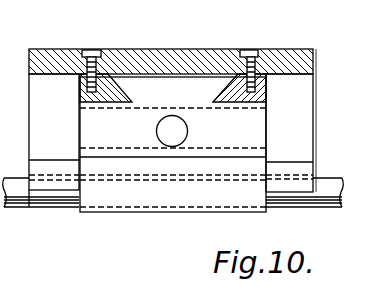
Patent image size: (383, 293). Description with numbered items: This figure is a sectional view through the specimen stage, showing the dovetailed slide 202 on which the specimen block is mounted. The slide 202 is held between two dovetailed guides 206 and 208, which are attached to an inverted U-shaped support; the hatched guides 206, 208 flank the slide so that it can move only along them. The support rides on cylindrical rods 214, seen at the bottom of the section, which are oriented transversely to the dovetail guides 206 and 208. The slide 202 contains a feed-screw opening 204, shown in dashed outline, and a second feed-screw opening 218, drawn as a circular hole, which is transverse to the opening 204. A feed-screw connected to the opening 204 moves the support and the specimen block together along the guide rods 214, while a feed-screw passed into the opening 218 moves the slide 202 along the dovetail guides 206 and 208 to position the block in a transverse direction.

The dovetailed slide 202 is at (175, 97).
The feed-screw opening 204 is at (241, 110).
The dovetailed guide 206 is at (268, 90).
The dovetailed guide 208 is at (117, 78).
The cylindrical rod 214 is at (35, 195).
The feed-screw opening 218 is at (167, 134).